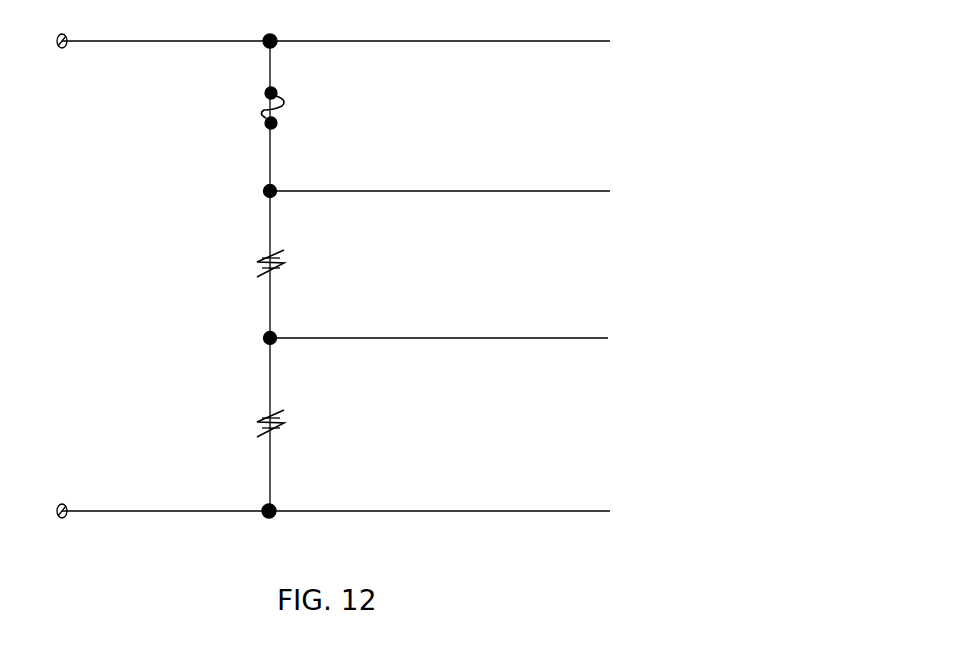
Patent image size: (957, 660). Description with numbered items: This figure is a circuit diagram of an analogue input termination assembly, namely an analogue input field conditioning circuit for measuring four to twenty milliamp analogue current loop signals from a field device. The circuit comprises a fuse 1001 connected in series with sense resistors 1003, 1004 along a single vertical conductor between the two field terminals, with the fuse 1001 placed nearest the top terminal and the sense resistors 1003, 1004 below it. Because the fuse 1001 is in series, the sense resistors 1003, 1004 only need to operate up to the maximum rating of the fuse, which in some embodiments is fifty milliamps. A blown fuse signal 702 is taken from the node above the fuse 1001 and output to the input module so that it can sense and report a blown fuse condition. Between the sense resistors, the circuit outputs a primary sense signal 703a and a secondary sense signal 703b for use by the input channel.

The blown fuse signal 702 is at (575, 42).
The primary sense signal 703a is at (571, 339).
The secondary sense signal 703b is at (573, 192).
The fuse 1001 is at (262, 108).
The sense resistor 1003 is at (257, 262).
The sense resistor 1004 is at (257, 423).